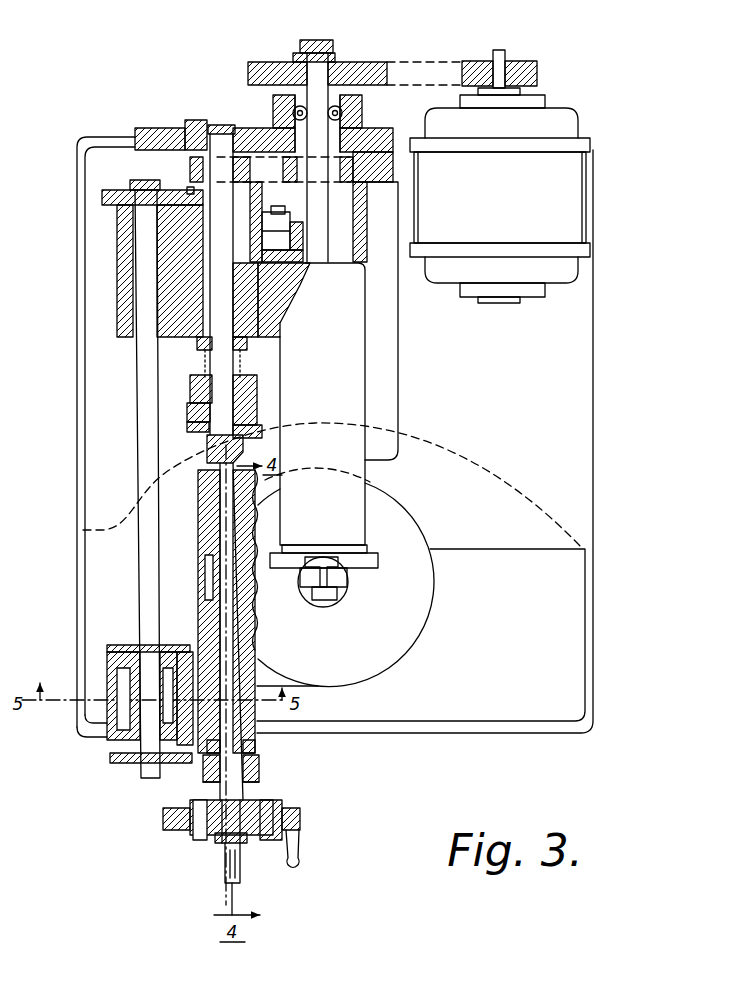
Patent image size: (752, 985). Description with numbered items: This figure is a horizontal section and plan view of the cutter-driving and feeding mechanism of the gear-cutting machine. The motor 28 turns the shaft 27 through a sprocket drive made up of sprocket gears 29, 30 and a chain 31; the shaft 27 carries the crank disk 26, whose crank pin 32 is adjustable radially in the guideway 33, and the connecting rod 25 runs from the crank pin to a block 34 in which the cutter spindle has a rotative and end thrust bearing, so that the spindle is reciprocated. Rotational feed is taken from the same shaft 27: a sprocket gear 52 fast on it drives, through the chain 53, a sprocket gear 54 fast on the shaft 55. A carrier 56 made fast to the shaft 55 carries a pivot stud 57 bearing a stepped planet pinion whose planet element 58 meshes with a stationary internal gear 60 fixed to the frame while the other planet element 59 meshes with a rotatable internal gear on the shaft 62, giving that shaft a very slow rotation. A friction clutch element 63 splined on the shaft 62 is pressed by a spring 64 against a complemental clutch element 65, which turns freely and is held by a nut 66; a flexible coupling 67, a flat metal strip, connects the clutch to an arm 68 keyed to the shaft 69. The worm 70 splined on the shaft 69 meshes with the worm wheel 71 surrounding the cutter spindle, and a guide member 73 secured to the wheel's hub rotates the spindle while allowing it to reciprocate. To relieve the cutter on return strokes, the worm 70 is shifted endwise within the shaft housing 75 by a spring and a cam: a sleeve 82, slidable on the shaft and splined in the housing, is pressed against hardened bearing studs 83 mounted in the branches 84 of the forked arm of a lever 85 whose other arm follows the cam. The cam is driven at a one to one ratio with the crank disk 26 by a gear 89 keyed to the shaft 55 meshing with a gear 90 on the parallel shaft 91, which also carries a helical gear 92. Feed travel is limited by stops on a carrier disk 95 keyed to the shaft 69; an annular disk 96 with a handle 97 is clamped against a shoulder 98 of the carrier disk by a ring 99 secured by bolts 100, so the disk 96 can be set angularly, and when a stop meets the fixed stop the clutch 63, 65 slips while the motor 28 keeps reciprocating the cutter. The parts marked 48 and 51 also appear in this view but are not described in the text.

The connecting rod 25 is at (345, 576).
The crank disk 26 is at (378, 560).
The shaft 27 is at (339, 299).
The motor 28 is at (500, 195).
The sprocket gear 29 is at (484, 61).
The sprocket gear 30 is at (274, 66).
The chain 31 is at (425, 66).
The crank pin 32 is at (326, 601).
The guideway 33 is at (330, 572).
The block 34 is at (307, 600).
The circular opening 48 is at (393, 650).
The ball bearing 51 is at (270, 236).
The sprocket gear 52 is at (348, 166).
The chain 53 is at (262, 124).
The sprocket gear 54 is at (190, 165).
The shaft 55 is at (176, 130).
The carrier 56 is at (268, 298).
The pivot stud 57 is at (283, 264).
The planet element 58 is at (307, 203).
The planet element 59 is at (268, 252).
The stationary internal gear 60 is at (284, 224).
The shaft 62 is at (233, 280).
The friction clutch element 63 is at (200, 384).
The spring 64 is at (205, 358).
The complemental clutch element 65 is at (197, 410).
The nut 66 is at (203, 432).
The flexible coupling 67 is at (252, 432).
The arm 68 is at (250, 443).
The shaft 69 is at (220, 540).
The worm 70 is at (207, 576).
The worm wheel 71 is at (256, 592).
The guide member 73 is at (205, 487).
The shaft housing 75 is at (200, 660).
The sleeve 82 is at (250, 741).
The bearing studs 83 is at (262, 768).
The branches 84 is at (254, 781).
The lever 85 is at (200, 768).
The gear 89 is at (190, 191).
The gear 90 is at (102, 198).
The shaft 91 is at (140, 418).
The helical gear 92 is at (115, 692).
The disk 95 is at (245, 881).
The annular disk 96 is at (163, 818).
The handle 97 is at (300, 856).
The shoulder 98 is at (257, 840).
The ring 99 is at (275, 806).
The bolts 100 is at (195, 832).